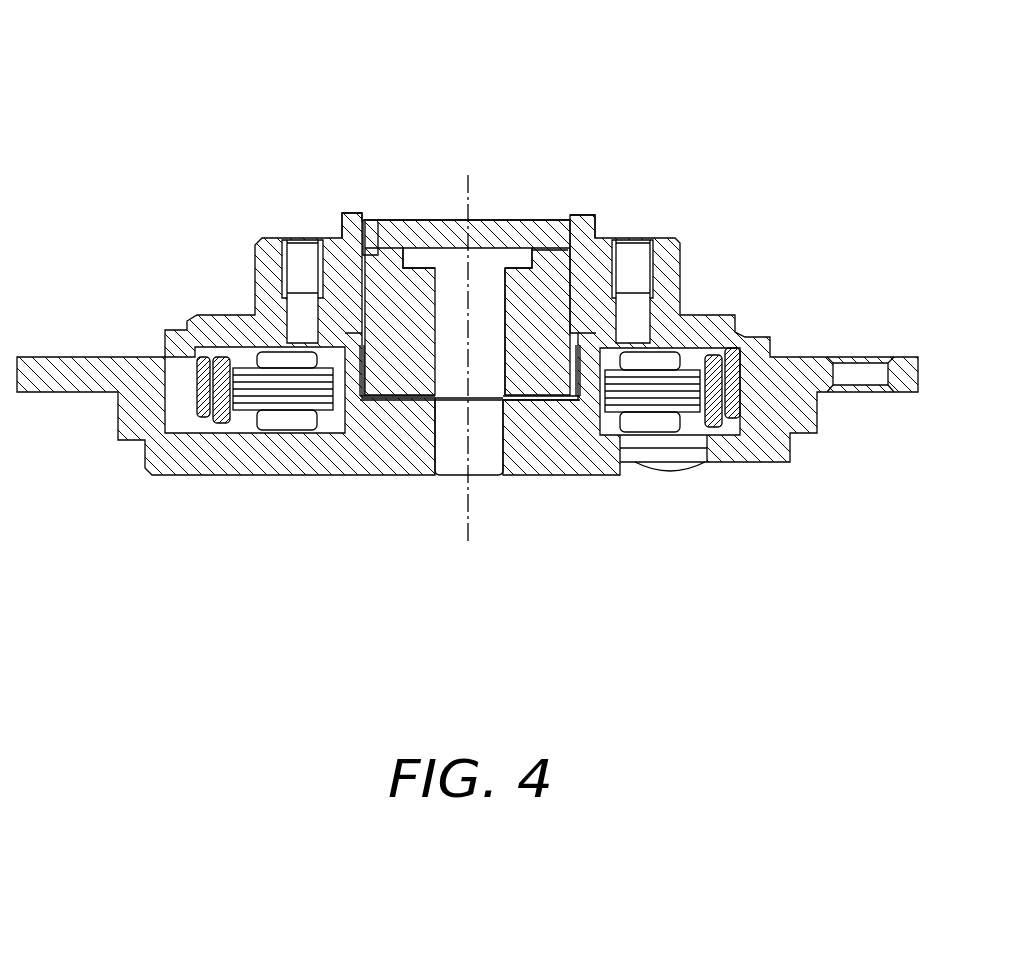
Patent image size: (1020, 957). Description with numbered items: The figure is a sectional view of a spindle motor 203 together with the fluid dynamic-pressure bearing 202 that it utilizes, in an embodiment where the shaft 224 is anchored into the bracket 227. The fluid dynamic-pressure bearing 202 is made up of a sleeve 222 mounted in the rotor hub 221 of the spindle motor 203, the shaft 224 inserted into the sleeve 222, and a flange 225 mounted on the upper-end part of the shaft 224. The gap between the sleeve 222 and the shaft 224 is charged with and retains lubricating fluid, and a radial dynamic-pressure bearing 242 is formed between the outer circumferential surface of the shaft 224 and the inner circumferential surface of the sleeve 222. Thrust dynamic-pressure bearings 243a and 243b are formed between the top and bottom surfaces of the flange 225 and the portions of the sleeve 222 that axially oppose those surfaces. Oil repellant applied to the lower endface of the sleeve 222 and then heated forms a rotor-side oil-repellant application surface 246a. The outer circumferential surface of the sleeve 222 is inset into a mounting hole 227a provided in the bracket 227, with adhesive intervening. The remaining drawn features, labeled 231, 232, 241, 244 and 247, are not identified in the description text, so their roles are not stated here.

The fluid dynamic-pressure bearing 202 is at (360, 193).
The spindle motor 203 is at (684, 197).
The rotor hub 221 is at (712, 392).
The sleeve 222 is at (508, 412).
The shaft 224 is at (485, 400).
The flange 225 is at (522, 255).
The bracket 227 is at (588, 350).
The mounting hole 227a is at (437, 405).
The coil 231 is at (657, 392).
The housing 232 is at (680, 305).
The hub 241 is at (418, 290).
The radial dynamic-pressure bearing 242 is at (345, 352).
The thrust dynamic-pressure bearing 243a is at (423, 265).
The thrust dynamic-pressure bearing 243b is at (416, 280).
The spacer plate 244 is at (521, 402).
The rotor-side oil-repellant application surface 246a is at (552, 400).
The rotation axis 247 is at (485, 400).